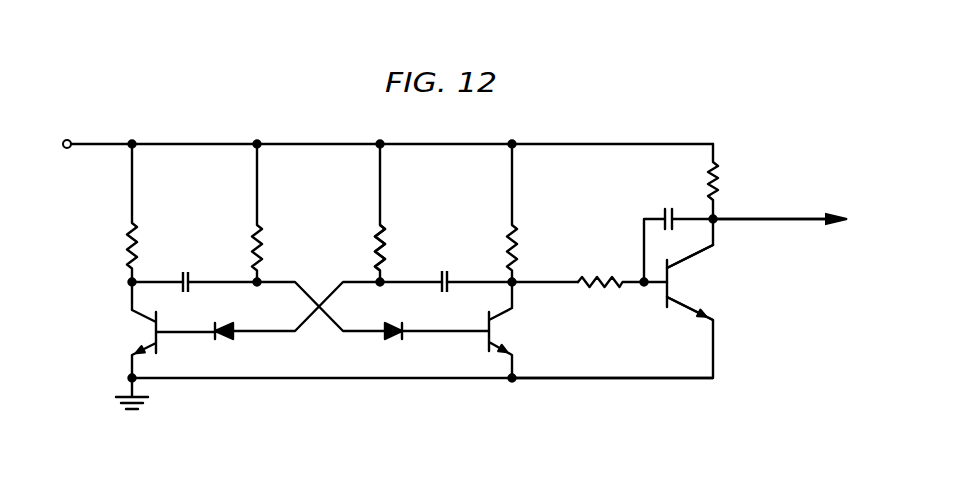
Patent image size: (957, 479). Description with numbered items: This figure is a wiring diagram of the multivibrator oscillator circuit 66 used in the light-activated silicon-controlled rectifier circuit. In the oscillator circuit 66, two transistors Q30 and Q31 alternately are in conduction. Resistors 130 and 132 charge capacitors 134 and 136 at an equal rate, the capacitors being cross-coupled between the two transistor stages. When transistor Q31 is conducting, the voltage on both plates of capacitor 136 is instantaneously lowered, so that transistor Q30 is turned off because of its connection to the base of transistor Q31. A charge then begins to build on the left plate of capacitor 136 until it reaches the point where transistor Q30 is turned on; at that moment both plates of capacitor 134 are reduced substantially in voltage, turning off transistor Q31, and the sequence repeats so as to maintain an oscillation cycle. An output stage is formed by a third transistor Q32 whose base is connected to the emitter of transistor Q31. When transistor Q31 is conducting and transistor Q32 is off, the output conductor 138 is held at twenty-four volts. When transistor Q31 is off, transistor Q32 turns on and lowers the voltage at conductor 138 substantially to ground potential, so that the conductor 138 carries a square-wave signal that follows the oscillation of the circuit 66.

The resistor 130 is at (261, 250).
The resistor 132 is at (385, 248).
The capacitor 134 is at (195, 273).
The capacitor 136 is at (458, 299).
The conductor 138 is at (782, 218).
The multivibrator oscillator circuit 66 is at (760, 341).
The transistor Q30 is at (150, 333).
The transistor Q31 is at (495, 326).
The transistor Q32 is at (672, 279).